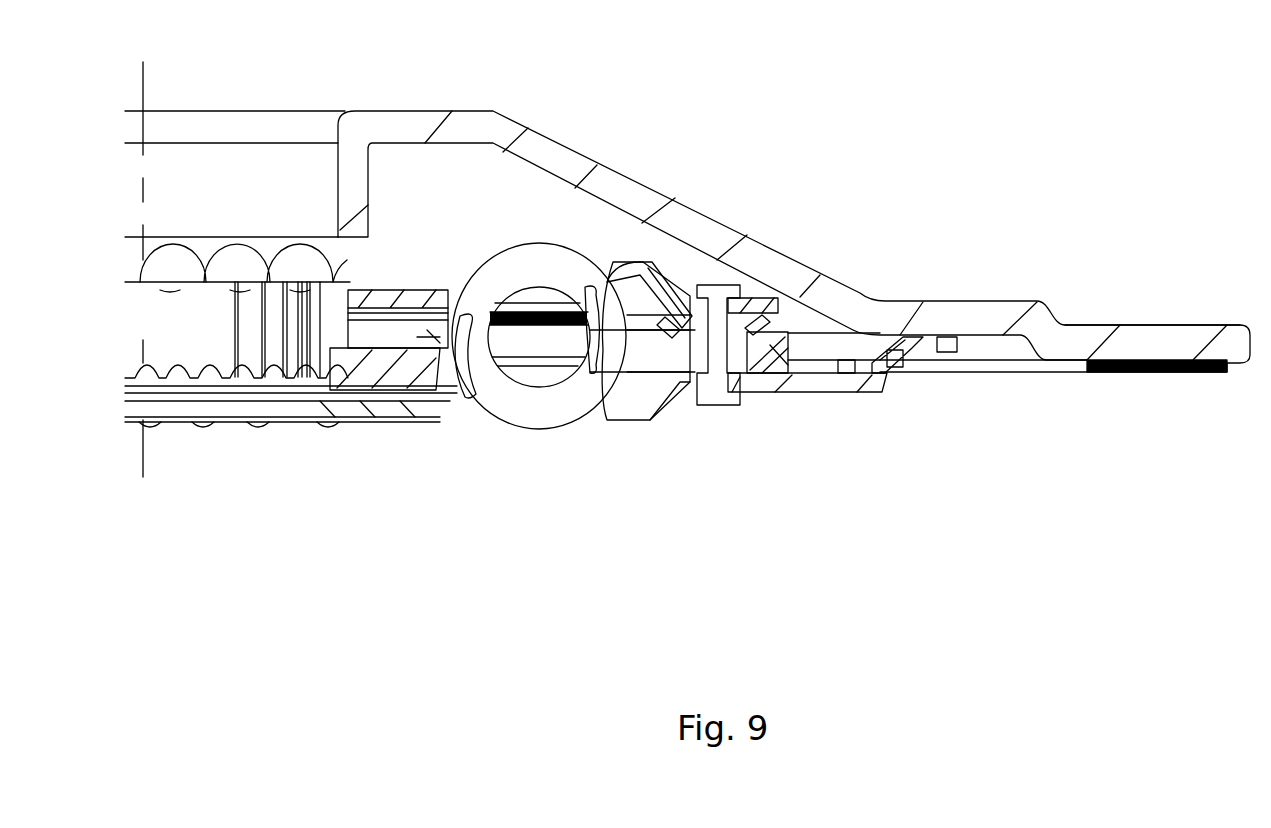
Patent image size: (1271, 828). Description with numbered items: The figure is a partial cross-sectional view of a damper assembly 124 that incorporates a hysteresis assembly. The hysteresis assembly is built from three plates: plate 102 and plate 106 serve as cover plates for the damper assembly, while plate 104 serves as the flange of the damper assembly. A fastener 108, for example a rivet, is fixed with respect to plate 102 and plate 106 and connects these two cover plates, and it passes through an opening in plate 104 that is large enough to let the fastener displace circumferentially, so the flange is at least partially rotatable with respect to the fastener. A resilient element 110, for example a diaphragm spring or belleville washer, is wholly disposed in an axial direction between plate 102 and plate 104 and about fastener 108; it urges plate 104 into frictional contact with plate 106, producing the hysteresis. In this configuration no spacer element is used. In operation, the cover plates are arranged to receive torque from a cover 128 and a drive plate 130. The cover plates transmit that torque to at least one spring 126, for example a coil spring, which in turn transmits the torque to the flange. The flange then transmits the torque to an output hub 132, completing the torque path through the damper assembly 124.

The plate 102 is at (663, 273).
The plate 104 is at (793, 353).
The plate 106 is at (637, 422).
The fastener 108 is at (728, 422).
The resilient element 110 is at (783, 323).
The damper assembly 124 is at (1125, 418).
The spring 126 is at (547, 408).
The cover 128 is at (1180, 323).
The drive plate 130 is at (893, 372).
The output hub 132 is at (202, 343).